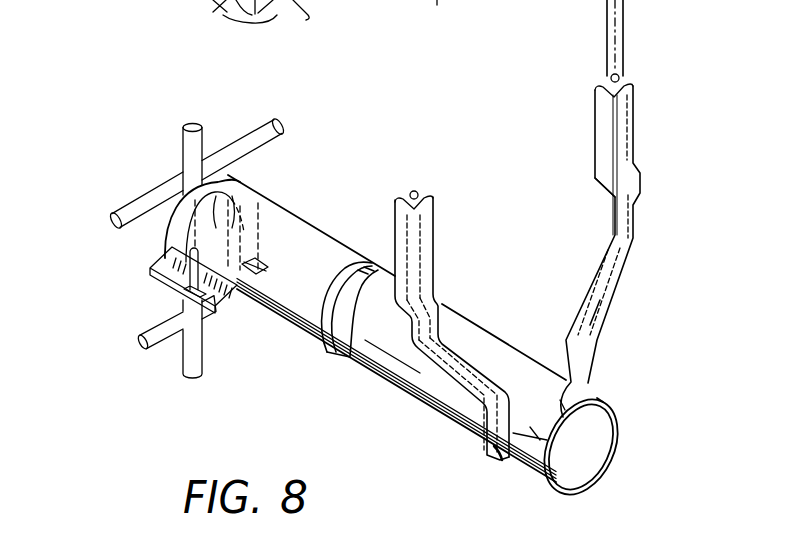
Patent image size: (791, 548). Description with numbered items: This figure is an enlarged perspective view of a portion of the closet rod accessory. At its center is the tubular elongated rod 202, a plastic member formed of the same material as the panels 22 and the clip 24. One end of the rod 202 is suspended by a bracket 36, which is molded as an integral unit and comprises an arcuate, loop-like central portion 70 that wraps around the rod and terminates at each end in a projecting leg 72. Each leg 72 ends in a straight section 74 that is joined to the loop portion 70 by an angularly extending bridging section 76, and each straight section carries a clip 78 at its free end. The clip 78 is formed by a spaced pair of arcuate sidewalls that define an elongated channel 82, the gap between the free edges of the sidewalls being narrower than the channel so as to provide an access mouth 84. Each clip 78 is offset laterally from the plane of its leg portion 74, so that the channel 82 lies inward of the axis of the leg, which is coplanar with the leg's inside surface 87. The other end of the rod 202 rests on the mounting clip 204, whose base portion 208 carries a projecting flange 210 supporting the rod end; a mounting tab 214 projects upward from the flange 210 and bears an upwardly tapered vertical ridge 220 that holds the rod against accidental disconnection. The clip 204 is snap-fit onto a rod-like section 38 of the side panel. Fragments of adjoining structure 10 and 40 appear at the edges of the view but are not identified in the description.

The exhaust pipe 10 is at (117, 171).
The panels 22 is at (428, 20).
The clip 24 is at (316, 20).
The component (adjacent figure) 40 is at (231, 23).
The bracket 36 is at (613, 303).
The rod-like section 38 is at (222, 157).
The loop portion 70 is at (500, 463).
The projecting leg 72 is at (438, 199).
The straight section 74 is at (433, 315).
The bridging section 76 is at (450, 377).
The clip 78 is at (400, 233).
The channel 82 is at (415, 191).
The access mouth 84 is at (405, 193).
The inside surface 87 is at (612, 223).
The rod 202 is at (278, 328).
The mounting clip 204 is at (155, 280).
The base portion 208 is at (183, 298).
The flange 210 is at (163, 262).
The mounting tab 214 is at (252, 200).
The ridge 220 is at (255, 218).